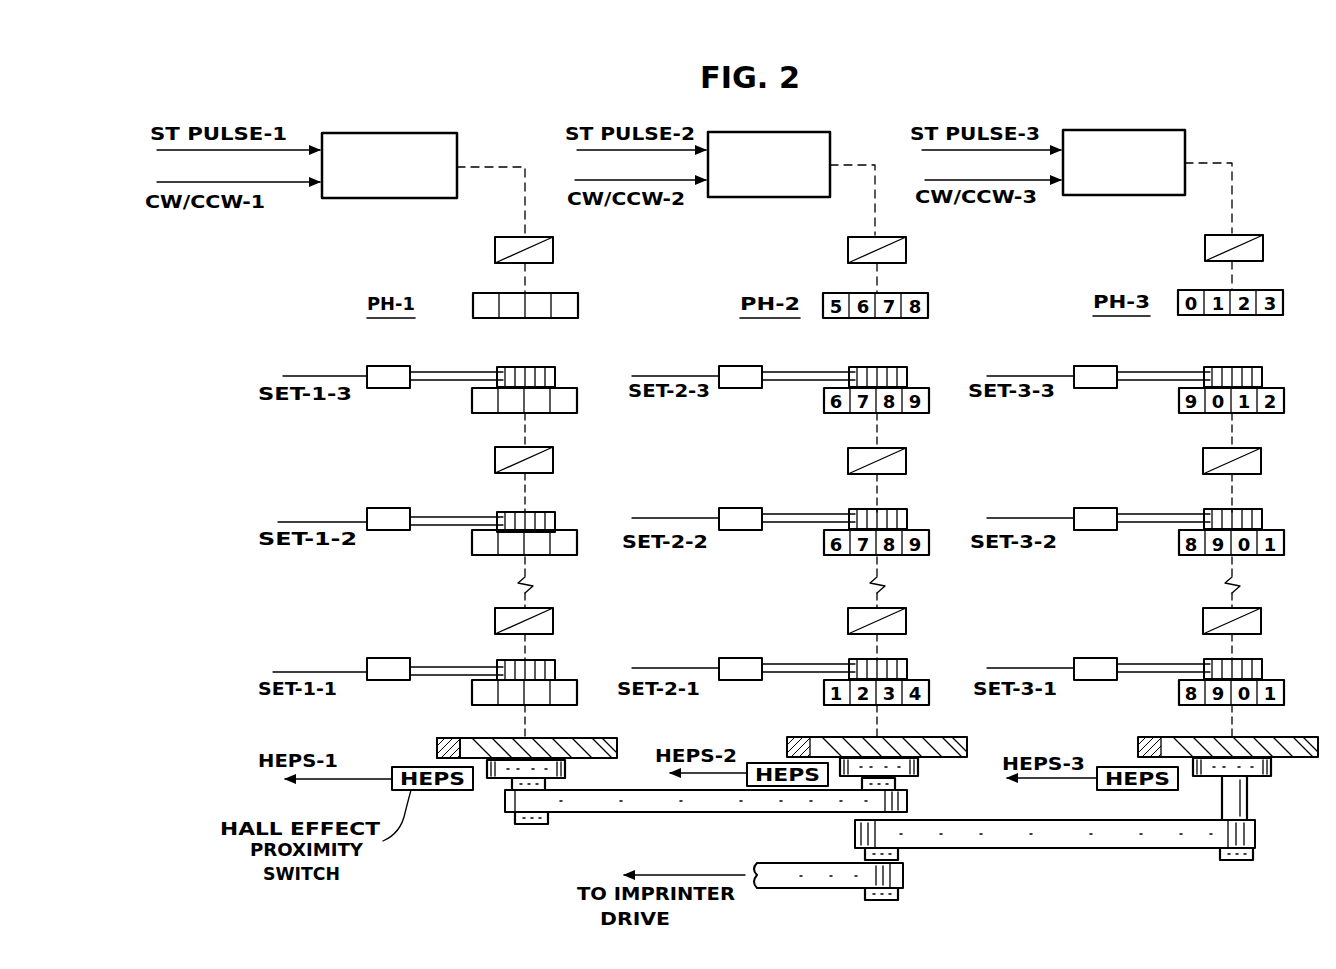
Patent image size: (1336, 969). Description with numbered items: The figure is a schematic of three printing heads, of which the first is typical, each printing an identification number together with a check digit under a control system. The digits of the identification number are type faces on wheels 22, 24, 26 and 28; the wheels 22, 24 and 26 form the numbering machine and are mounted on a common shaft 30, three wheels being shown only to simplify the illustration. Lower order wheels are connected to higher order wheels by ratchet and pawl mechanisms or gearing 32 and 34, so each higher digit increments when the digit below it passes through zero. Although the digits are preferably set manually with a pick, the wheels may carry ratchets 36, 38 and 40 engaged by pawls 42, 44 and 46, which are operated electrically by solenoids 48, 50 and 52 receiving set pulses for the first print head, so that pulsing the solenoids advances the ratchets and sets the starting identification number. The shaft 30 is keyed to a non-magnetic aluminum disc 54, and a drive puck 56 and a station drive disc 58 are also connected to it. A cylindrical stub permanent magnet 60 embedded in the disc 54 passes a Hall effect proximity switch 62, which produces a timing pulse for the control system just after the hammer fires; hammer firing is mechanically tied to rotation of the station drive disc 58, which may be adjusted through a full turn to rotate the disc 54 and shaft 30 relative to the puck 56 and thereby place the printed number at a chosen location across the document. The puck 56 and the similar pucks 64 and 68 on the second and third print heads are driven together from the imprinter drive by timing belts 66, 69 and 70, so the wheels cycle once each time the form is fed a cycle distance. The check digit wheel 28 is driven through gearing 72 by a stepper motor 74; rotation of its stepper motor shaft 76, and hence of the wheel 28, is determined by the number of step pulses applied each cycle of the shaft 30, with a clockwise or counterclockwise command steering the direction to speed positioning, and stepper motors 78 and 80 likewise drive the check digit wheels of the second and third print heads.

The digit wheel 22 is at (533, 705).
The digit wheel 24 is at (503, 556).
The digit wheel 26 is at (542, 408).
The check digit numbering wheel 28 is at (560, 301).
The shaft 30 is at (502, 721).
The ratchet and pawl mechanism or gearing 32 is at (548, 618).
The ratchet and pawl mechanism or gearing 34 is at (548, 461).
The ratchet 36 is at (546, 659).
The ratchet 38 is at (546, 512).
The ratchet 40 is at (549, 369).
The pawl 42 is at (468, 667).
The pawl 44 is at (468, 517).
The pawl 46 is at (435, 372).
The solenoid 48 is at (397, 658).
The solenoid 50 is at (397, 508).
The solenoid 52 is at (380, 388).
The disc 54 is at (549, 733).
The drive puck 56 is at (551, 832).
The station drive disc 58 is at (550, 775).
The magnet 60 is at (460, 727).
The Hall effect proximity switch 62 is at (438, 790).
The puck 64 is at (853, 848).
The timing belt 66 is at (688, 815).
The puck 68 is at (1250, 808).
The timing belt 69 is at (1127, 850).
The timing belt 70 is at (855, 881).
The gearing 72 is at (549, 243).
The stepper motor 74 is at (408, 198).
The stepper motor shaft 76 is at (460, 167).
The stepper motor 78 is at (800, 197).
The stepper motor 80 is at (1088, 195).